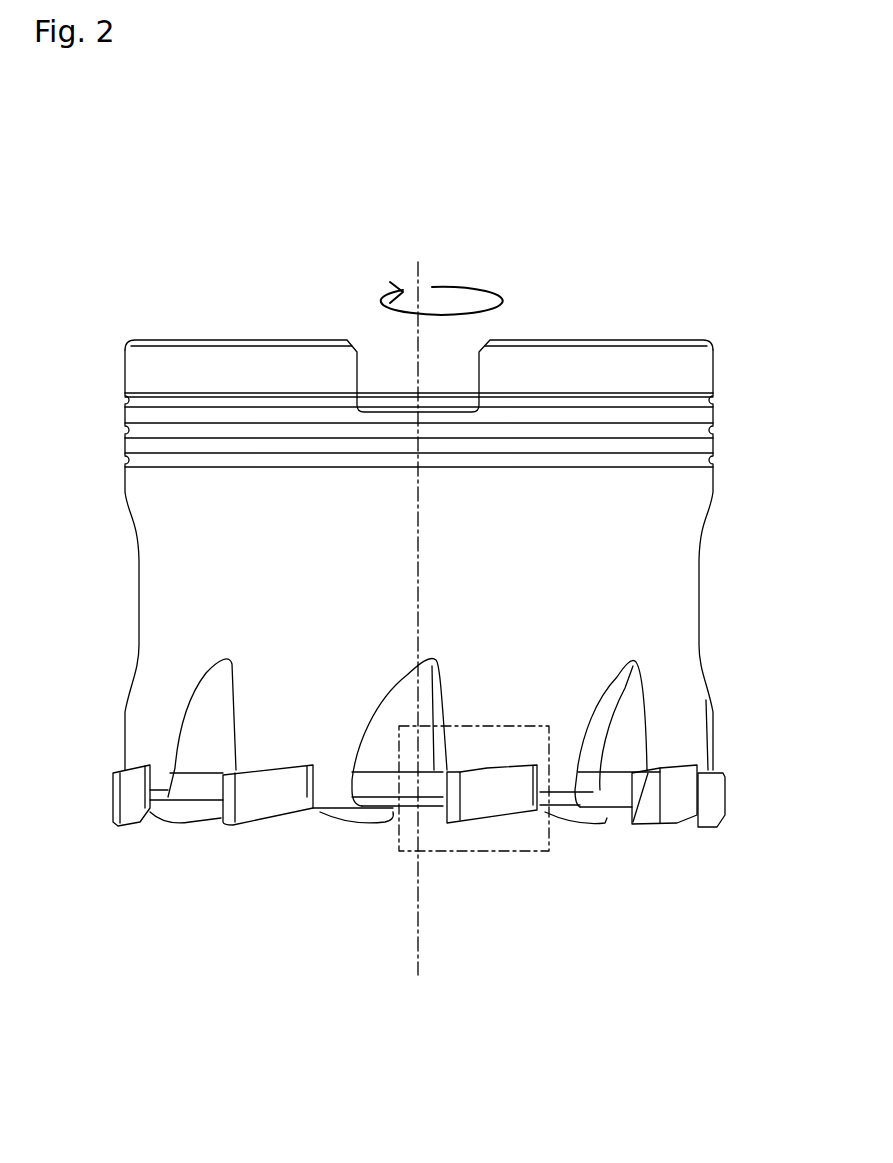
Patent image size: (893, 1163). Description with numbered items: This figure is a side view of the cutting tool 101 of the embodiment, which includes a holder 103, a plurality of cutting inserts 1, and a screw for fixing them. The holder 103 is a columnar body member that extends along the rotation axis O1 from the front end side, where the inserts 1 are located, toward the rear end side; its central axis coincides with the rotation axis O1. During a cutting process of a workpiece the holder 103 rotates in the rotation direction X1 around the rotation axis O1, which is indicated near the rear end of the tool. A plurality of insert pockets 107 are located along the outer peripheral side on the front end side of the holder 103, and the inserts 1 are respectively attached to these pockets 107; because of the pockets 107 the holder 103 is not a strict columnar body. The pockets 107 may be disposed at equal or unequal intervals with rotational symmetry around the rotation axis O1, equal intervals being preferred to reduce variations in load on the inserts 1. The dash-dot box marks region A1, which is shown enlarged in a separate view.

The cutting tool 101 is at (203, 233).
The holder 103 is at (602, 337).
The cutting insert 1 is at (137, 795).
The insert pocket 107 is at (267, 771).
The rotation axis O1 is at (415, 603).
The rotation direction X1 is at (410, 298).
The region A1 is at (505, 723).